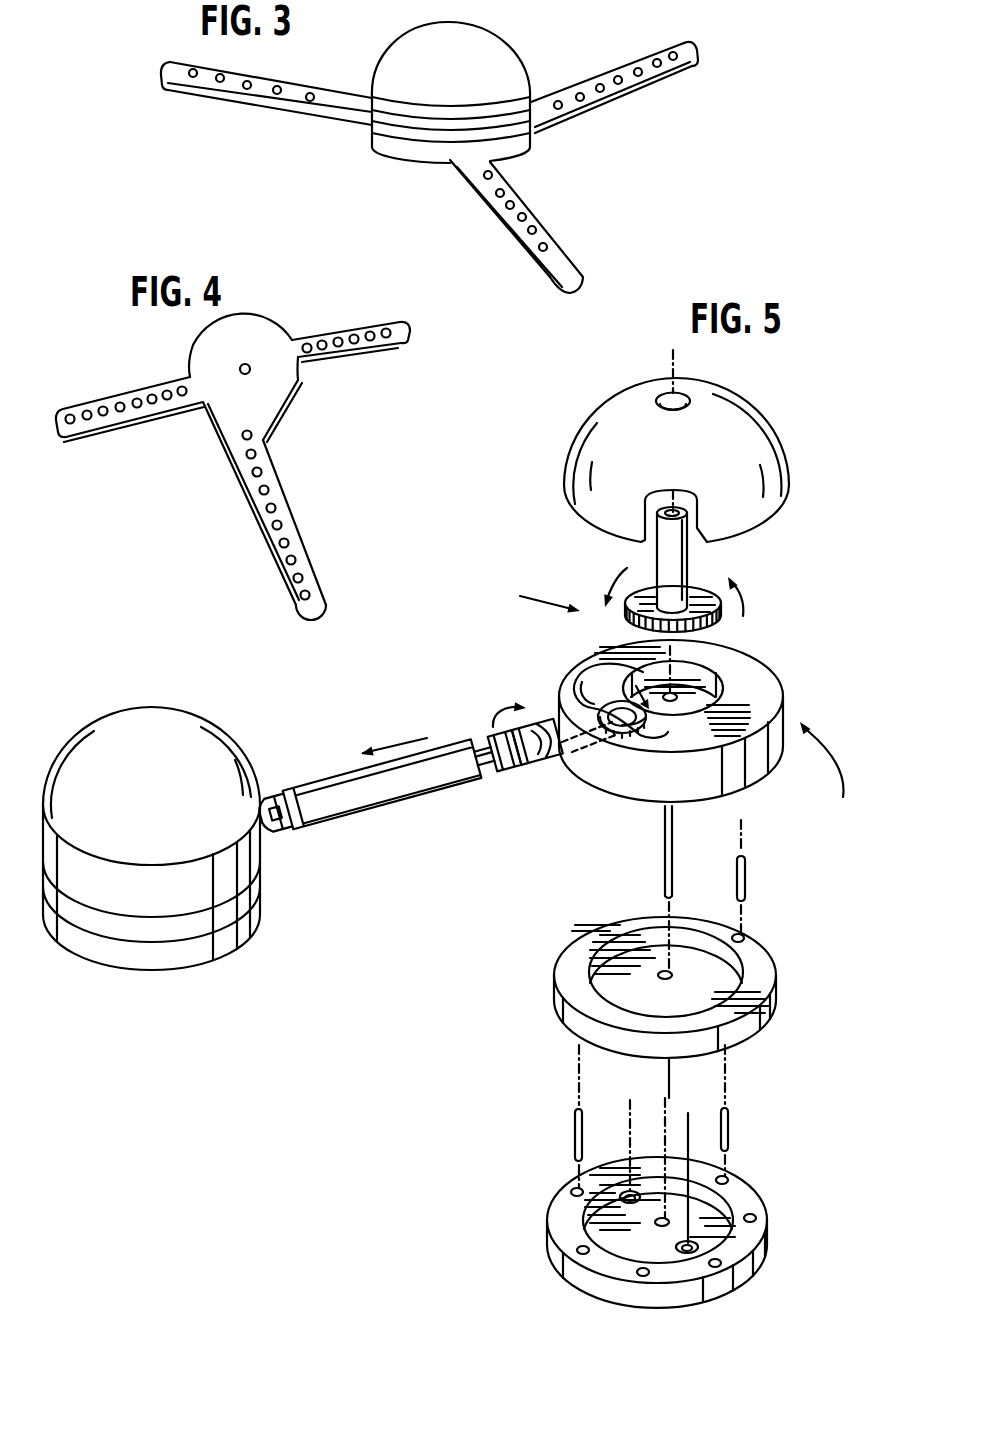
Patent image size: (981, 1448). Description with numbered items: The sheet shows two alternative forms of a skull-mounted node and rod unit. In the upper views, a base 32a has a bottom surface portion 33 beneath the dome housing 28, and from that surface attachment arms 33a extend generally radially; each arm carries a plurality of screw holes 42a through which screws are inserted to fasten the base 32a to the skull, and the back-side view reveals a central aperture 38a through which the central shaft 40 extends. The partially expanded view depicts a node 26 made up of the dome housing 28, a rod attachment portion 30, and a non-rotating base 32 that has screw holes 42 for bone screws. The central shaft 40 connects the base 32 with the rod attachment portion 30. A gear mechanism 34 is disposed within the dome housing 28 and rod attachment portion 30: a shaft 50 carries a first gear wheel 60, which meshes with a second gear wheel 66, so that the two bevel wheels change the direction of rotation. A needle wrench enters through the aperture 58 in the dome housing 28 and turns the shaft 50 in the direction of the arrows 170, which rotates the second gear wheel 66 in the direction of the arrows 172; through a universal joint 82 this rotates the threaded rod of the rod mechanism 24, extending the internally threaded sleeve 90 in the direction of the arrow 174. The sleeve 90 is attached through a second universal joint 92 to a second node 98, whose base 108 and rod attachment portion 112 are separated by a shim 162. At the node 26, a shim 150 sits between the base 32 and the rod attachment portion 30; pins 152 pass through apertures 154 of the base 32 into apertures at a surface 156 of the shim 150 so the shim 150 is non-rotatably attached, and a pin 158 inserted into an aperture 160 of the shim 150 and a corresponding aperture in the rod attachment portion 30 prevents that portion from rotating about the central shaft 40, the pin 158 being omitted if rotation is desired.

In FIG. 5, the rod mechanism 24 is at (409, 792).
In FIG. 5, the node 26 is at (839, 767).
In FIG. 3, the dome housing 28 is at (505, 60).
In FIG. 5, the dome housing 28 is at (737, 447).
In FIG. 5, the rod attachment portion 30 is at (755, 675).
In FIG. 5, the base 32 is at (748, 1278).
In FIG. 3, the base 32a is at (525, 148).
In FIG. 4, the base 32a is at (300, 386).
In FIG. 3, the bottom surface portion 33 is at (413, 163).
In FIG. 4, the bottom surface portion 33 is at (265, 325).
In FIG. 3, the attachment arms 33a is at (223, 102).
In FIG. 4, the attachment arms 33a is at (112, 395).
In FIG. 5, the gear mechanism 34 is at (532, 597).
In FIG. 4, the central aperture 38a is at (240, 370).
In FIG. 5, the central shaft 40 is at (663, 850).
In FIG. 5, the screw holes 42 is at (700, 1243).
In FIG. 3, the screw holes 42a is at (310, 101).
In FIG. 4, the screw holes 42a is at (107, 414).
In FIG. 5, the shaft 50 is at (688, 560).
In FIG. 5, the aperture 58 is at (690, 403).
In FIG. 5, the first gear wheel 60 is at (720, 628).
In FIG. 5, the second gear wheel 66 is at (570, 688).
In FIG. 5, the universal joint 82 is at (541, 780).
In FIG. 5, the sleeve 90 is at (318, 780).
In FIG. 5, the universal joint 92 is at (280, 840).
In FIG. 5, the second node 98 is at (190, 730).
In FIG. 5, the base 108 is at (170, 960).
In FIG. 5, the rod attachment portion 112 is at (123, 895).
In FIG. 5, the shim 150 is at (755, 963).
In FIG. 5, the pins 152 is at (575, 1130).
In FIG. 5, the apertures 154 is at (570, 1196).
In FIG. 5, the surface 156 is at (735, 1043).
In FIG. 5, the pin 158 is at (745, 882).
In FIG. 5, the aperture 160 is at (745, 937).
In FIG. 5, the shim 162 is at (193, 927).
In FIG. 5, the arrows 170 is at (618, 578).
In FIG. 5, the arrows 172 is at (613, 680).
In FIG. 5, the arrow 174 is at (405, 737).